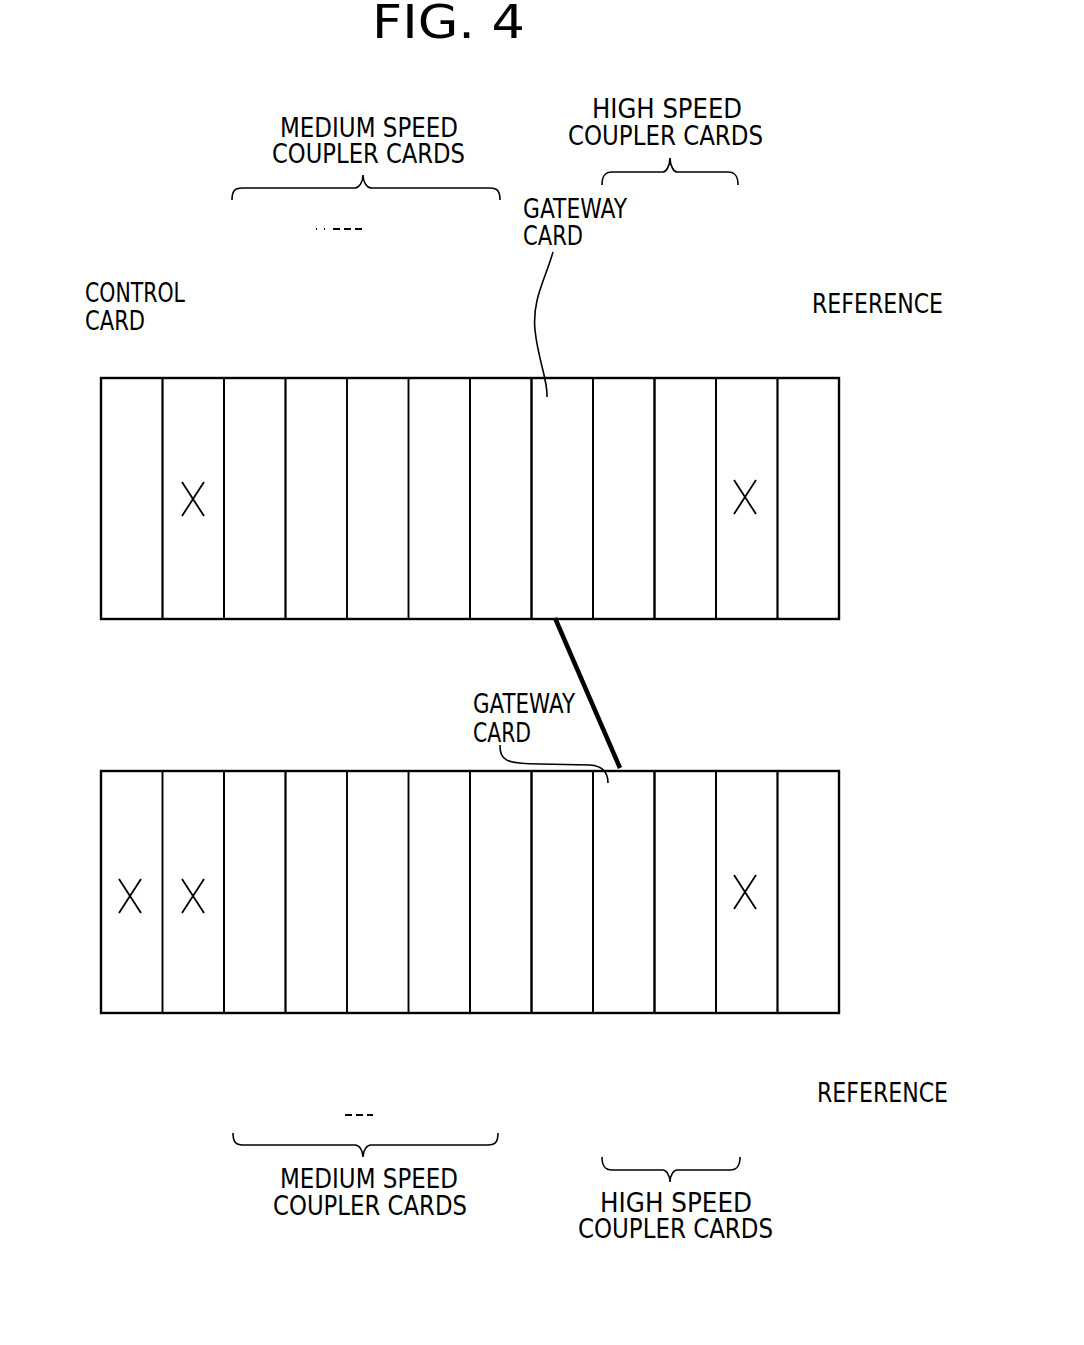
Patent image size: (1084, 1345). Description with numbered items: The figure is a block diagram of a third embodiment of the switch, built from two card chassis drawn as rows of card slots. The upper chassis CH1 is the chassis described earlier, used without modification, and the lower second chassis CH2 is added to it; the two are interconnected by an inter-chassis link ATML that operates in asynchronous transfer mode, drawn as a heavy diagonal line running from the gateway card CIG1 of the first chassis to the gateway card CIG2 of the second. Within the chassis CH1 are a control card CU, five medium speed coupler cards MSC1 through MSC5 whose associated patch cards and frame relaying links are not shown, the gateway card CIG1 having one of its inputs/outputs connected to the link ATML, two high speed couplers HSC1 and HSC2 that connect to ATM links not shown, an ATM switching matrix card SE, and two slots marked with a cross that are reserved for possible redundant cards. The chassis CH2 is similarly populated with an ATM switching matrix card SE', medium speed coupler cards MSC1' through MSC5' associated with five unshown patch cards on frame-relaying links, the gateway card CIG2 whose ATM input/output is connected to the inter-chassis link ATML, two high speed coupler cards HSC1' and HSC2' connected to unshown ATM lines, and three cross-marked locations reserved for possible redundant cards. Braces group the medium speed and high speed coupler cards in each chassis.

The chassis CH1 is at (853, 426).
The second chassis CH2 is at (853, 833).
The control card CU is at (110, 397).
The medium speed coupler card MSC1 is at (266, 412).
The medium speed coupler card MSC5 is at (477, 412).
The gateway card CIG1 is at (553, 405).
The high speed coupler HSC1 is at (624, 434).
The high speed coupler HSC2 is at (698, 469).
The ATM switching matrix card SE is at (809, 469).
The inter-chassis link ATML is at (597, 707).
The medium speed coupler card MSC1' is at (265, 947).
The medium speed coupler card MSC5' is at (477, 947).
The high speed coupler card HSC1' is at (591, 960).
The gateway card CIG2 is at (625, 1013).
The high speed coupler card HSC2' is at (718, 960).
The ATM switching matrix card SE' is at (813, 925).